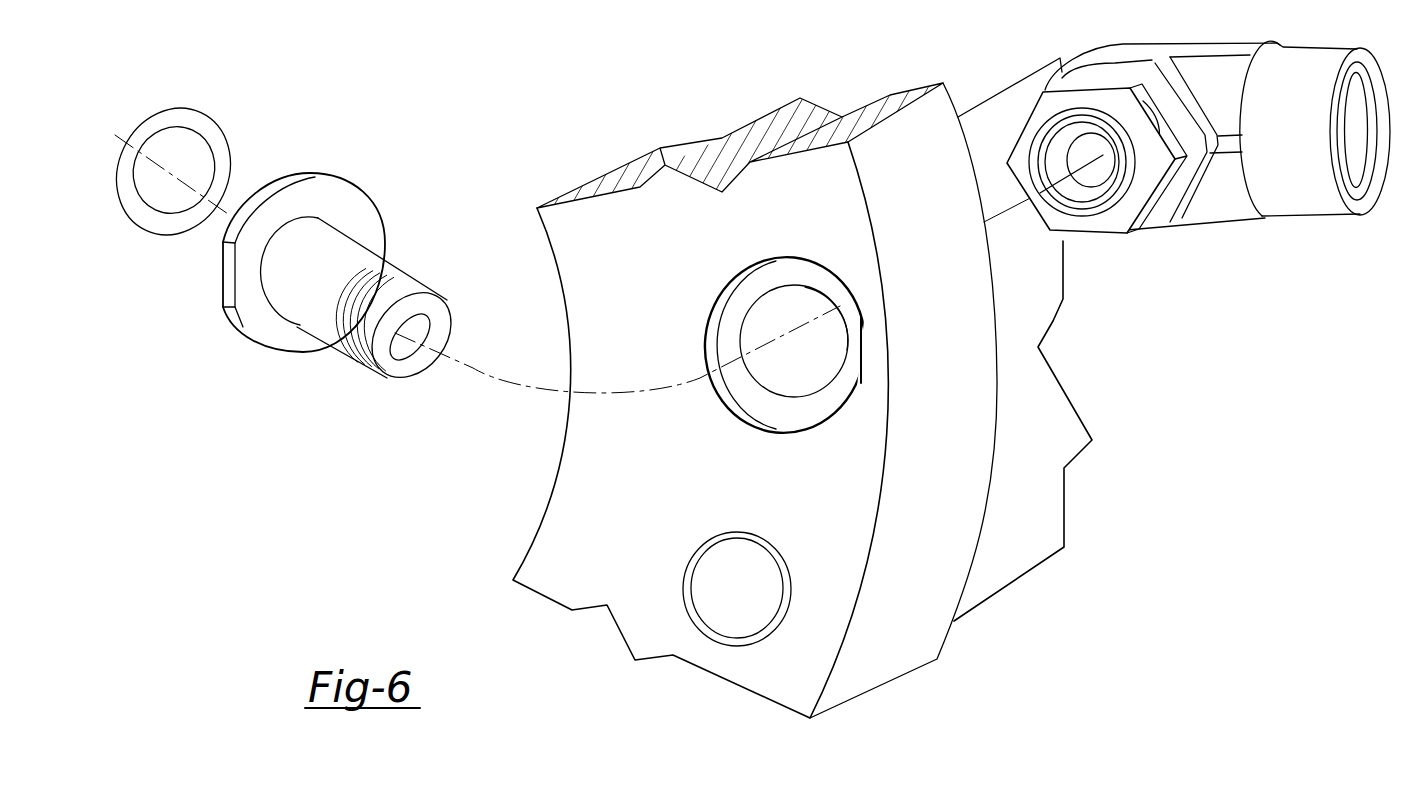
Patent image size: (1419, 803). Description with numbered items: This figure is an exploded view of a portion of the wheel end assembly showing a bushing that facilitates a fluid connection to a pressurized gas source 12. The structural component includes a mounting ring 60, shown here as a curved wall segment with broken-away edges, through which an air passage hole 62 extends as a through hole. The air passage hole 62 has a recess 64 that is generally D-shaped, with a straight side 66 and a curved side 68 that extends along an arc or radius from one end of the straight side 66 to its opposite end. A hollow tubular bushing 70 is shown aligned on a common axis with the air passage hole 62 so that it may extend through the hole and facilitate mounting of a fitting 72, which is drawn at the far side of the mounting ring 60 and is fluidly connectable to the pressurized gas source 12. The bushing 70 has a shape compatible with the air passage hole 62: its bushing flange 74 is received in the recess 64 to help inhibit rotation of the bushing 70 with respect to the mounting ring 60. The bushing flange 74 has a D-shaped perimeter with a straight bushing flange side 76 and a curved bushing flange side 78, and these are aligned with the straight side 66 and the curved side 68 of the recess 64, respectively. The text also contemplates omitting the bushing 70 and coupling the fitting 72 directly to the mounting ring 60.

The pressurized gas source 12 is at (1053, 321).
The mounting ring 60 is at (818, 653).
The air passage hole 62 is at (788, 363).
The recess 64 is at (807, 413).
The straight side 66 is at (859, 341).
The curved side 68 is at (714, 320).
The bushing 70 is at (309, 263).
The fitting 72 is at (1213, 220).
The bushing flange 74 is at (300, 172).
The straight bushing flange side 76 is at (228, 273).
The curved bushing flange side 78 is at (268, 350).